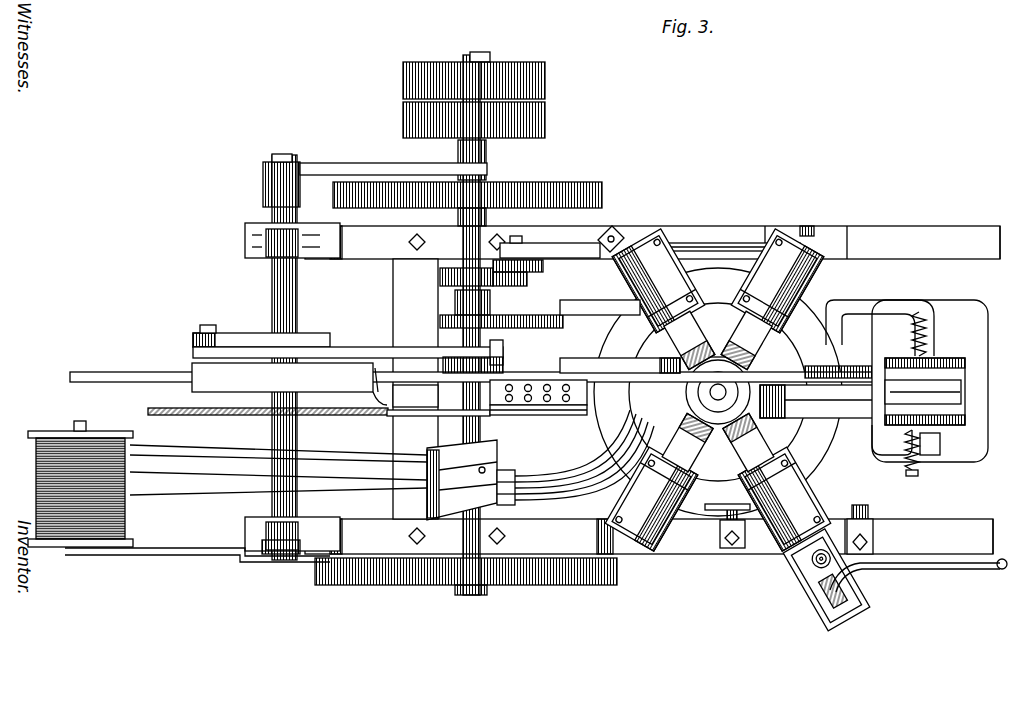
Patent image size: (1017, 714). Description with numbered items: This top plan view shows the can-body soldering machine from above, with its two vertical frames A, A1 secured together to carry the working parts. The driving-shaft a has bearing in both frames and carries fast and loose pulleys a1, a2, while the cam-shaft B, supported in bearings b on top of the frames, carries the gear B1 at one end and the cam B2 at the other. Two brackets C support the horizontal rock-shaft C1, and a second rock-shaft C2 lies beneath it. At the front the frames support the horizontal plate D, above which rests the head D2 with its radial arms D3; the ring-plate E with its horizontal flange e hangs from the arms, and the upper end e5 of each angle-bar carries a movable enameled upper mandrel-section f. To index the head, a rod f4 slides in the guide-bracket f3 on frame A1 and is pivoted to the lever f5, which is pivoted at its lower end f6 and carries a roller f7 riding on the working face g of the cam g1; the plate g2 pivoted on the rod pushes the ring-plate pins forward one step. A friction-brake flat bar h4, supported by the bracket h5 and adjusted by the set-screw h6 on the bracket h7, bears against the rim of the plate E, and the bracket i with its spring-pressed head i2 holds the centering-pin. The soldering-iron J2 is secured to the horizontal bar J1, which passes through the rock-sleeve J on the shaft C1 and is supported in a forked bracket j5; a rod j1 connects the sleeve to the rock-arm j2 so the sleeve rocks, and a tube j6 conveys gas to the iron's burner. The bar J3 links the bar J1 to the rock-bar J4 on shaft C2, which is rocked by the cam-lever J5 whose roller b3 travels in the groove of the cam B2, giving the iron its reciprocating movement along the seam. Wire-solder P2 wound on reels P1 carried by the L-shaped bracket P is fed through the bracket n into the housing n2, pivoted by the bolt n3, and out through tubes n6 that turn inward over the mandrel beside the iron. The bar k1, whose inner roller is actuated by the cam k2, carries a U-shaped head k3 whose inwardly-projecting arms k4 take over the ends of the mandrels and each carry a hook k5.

The driving-shaft a is at (482, 57).
The fast pulley a1 is at (410, 79).
The loose pulley a2 is at (530, 121).
The bearings b is at (396, 243).
The roller b3 is at (488, 178).
The cam-shaft B is at (470, 596).
The gear B1 is at (340, 586).
The cam B2 is at (528, 192).
The brackets C is at (248, 253).
The rock-shaft C1 is at (300, 291).
The rock-shaft C2 is at (268, 211).
The rock-sleeve J is at (206, 381).
The horizontal bar J1 is at (146, 373).
The soldering-iron J2 is at (547, 406).
The bar J3 is at (314, 350).
The rock-bar J4 is at (198, 334).
The cam-lever J5 is at (375, 168).
The rod j1 is at (380, 400).
The rock-arm j2 is at (340, 404).
The forked bracket j5 is at (720, 336).
The tube j6 is at (206, 416).
The bracket n is at (415, 396).
The housing n2 is at (462, 480).
The bolt n3 is at (513, 478).
The tubes n6 is at (582, 470).
The working face g is at (490, 286).
The cam g1 is at (436, 273).
The plate g2 is at (612, 250).
The upper mandrel-section f is at (641, 550).
The guide-bracket f3 is at (808, 228).
The rod f4 is at (710, 246).
The lever f5 is at (574, 246).
The lower end of lever f6 is at (540, 266).
The roller f7 is at (525, 285).
The vertical frame A is at (702, 556).
The vertical frame A1 is at (679, 232).
The horizontal plate D is at (742, 263).
The head D2 is at (812, 350).
The radial arms D3 is at (628, 494).
The ring-plate E is at (818, 312).
The horizontal flange e is at (788, 345).
The upper end of angle-bar e5 is at (684, 446).
The bar k1 is at (896, 312).
The cam k2 is at (556, 330).
The U-shaped head k3 is at (962, 332).
The inwardly-projecting arms k4 is at (925, 368).
The hook k5 is at (895, 445).
The flat bar h4 is at (730, 506).
The bracket h5 is at (874, 528).
The set-screw h6 is at (731, 546).
The bracket h7 is at (716, 524).
The bracket i is at (834, 612).
The spring-pressed head i2 is at (925, 566).
The L-shaped bracket P is at (190, 560).
The reels P1 is at (130, 546).
The wire-solder P2 is at (230, 496).